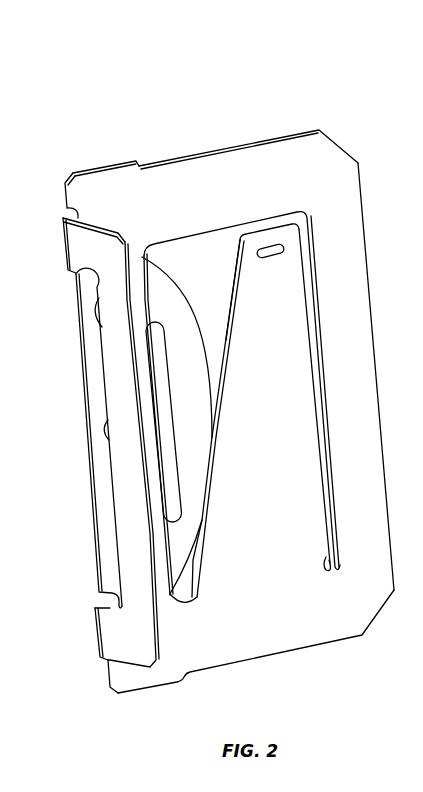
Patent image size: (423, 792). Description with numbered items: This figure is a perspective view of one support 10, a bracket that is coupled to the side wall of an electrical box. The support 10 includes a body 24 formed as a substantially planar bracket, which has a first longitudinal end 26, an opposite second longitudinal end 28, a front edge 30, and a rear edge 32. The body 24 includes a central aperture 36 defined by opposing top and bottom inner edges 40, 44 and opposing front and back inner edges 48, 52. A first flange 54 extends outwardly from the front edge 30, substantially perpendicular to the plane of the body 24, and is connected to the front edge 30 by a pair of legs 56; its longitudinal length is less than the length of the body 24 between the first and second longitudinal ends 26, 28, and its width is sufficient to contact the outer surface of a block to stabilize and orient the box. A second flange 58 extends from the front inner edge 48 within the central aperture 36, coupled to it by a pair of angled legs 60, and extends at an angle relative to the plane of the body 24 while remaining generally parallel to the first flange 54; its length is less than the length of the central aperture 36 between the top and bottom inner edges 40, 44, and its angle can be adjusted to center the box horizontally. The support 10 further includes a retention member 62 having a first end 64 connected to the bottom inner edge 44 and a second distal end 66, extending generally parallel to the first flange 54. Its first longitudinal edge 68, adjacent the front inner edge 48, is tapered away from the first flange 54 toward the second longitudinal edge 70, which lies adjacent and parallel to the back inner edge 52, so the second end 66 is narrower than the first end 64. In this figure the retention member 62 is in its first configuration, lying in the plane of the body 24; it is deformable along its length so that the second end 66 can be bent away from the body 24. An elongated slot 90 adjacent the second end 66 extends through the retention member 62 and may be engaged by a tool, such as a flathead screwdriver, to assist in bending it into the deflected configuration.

The support 10 is at (307, 66).
The body 24 is at (242, 168).
The first longitudinal end 26 is at (172, 162).
The second longitudinal end 28 is at (272, 657).
The front edge 30 is at (85, 402).
The rear edge 32 is at (368, 242).
The central aperture 36 is at (190, 276).
The top inner edge 40 is at (188, 238).
The bottom inner edge 44 is at (184, 600).
The front inner edge 48 is at (152, 418).
The back inner edge 52 is at (312, 300).
The first flange 54 is at (130, 500).
The legs 56 is at (77, 245).
The second flange 58 is at (197, 467).
The angled legs 60 is at (153, 296).
The retention member 62 is at (277, 410).
The first end 64 is at (326, 572).
The second distal end 66 is at (267, 230).
The first longitudinal edge 68 is at (228, 292).
The second longitudinal edge 70 is at (316, 362).
The slot 90 is at (272, 245).